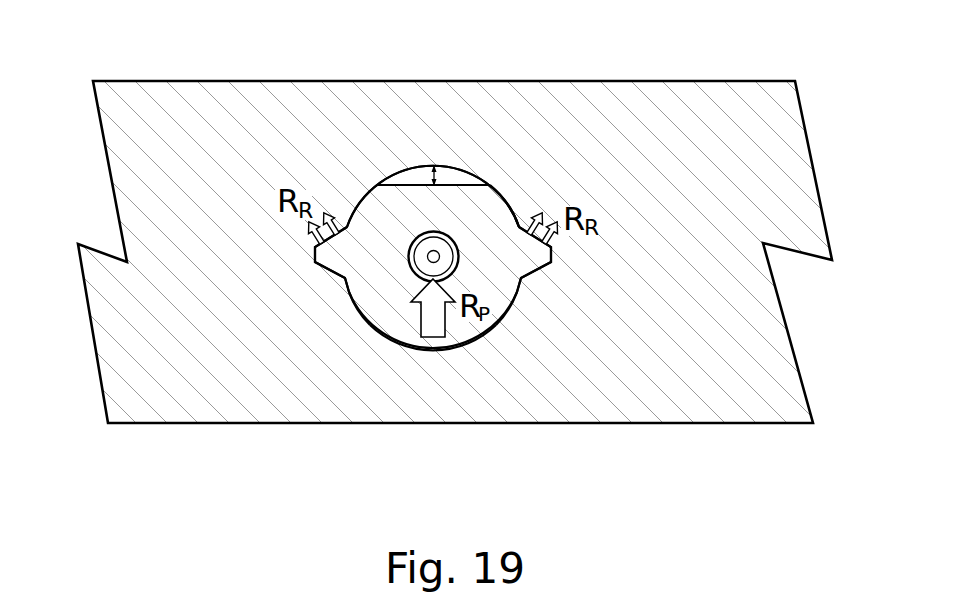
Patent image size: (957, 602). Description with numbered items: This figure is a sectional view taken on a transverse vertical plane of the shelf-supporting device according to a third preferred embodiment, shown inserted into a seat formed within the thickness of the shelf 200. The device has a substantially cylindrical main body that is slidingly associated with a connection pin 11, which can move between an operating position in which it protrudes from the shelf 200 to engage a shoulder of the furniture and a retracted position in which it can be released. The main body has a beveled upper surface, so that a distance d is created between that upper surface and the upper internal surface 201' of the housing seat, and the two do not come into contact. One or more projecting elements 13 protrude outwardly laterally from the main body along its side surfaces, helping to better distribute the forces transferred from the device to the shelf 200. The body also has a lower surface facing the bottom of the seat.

The shelf 200 is at (716, 113).
The connection pin 11 is at (498, 227).
The distance d is at (455, 185).
The upper internal surface 201' is at (476, 146).
The projecting elements 13 is at (323, 265).